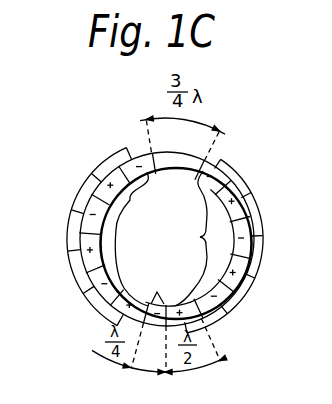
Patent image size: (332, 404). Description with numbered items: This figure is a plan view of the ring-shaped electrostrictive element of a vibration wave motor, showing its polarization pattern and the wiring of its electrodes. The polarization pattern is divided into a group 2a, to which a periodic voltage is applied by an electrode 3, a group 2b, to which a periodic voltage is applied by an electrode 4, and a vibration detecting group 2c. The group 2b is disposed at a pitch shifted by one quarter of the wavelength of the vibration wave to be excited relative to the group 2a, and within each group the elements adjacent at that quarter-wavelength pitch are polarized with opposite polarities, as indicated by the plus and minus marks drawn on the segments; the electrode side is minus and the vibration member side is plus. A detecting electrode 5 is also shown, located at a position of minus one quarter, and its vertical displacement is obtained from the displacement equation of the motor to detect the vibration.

The group of electrostrictive elements 2a is at (186, 238).
The group of electrostrictive elements 2b is at (143, 239).
The vibration detecting group 2c is at (156, 287).
The electrode 3 is at (252, 237).
The electrode 4 is at (88, 237).
The detecting electrode 5 is at (152, 324).